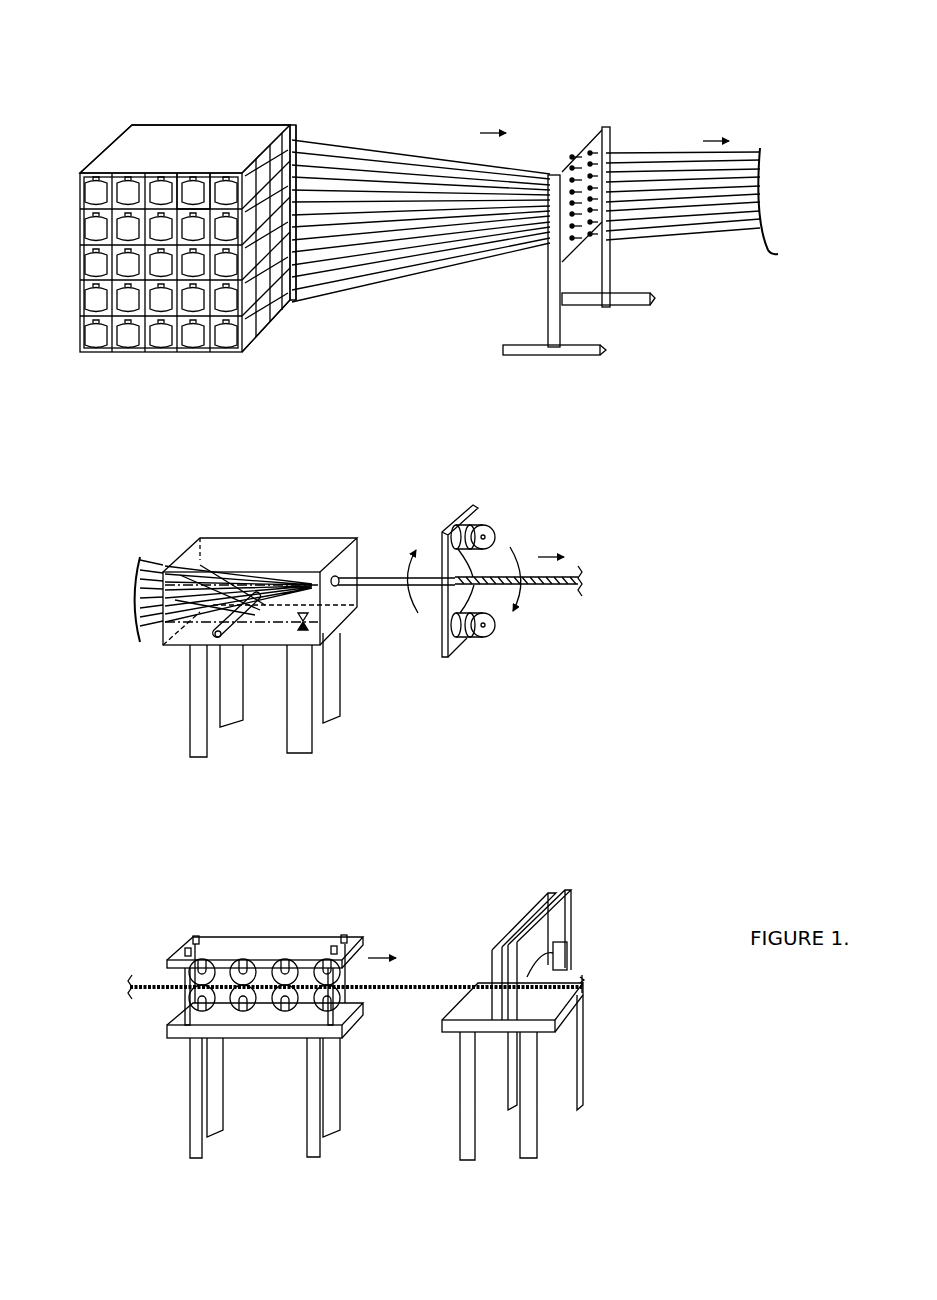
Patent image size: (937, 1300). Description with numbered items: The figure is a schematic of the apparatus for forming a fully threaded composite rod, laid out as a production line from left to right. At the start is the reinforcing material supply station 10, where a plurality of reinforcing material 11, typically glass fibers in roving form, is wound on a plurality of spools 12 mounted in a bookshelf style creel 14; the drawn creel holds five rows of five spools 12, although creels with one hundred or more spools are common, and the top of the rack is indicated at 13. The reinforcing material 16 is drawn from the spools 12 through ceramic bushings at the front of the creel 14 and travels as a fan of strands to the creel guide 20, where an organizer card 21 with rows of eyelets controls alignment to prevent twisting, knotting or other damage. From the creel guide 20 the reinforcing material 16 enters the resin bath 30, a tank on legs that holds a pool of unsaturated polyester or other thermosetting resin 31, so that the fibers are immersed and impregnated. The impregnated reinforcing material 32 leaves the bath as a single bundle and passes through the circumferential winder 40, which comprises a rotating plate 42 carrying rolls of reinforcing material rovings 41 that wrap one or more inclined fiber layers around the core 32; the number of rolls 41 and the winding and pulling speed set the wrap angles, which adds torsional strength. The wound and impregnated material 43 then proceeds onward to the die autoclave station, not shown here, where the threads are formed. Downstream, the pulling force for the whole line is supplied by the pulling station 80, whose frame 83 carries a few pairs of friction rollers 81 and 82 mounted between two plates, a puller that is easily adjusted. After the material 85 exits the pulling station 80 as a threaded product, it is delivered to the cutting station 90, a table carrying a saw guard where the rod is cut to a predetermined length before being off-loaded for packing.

The reinforcing material supply station 10 is at (236, 21).
The reinforcing material 11 is at (160, 193).
The spools 12 is at (190, 177).
The creel top 13 is at (217, 143).
The bookshelf style creel 14 is at (291, 125).
The reinforcing material 16 is at (413, 145).
The creel guide 20 is at (598, 21).
The organizer card 21 is at (605, 128).
The resin bath 30 is at (290, 422).
The resin 31 is at (305, 637).
The impregnated reinforcing material 32 is at (372, 578).
The circumferential winder 40 is at (474, 422).
The reinforcing material rovings 41 is at (493, 537).
The roller support plate 42 is at (457, 645).
The wound and impregnated material 43 is at (548, 584).
The pulling station 80 is at (274, 822).
The friction rollers 81 is at (253, 1003).
The friction rollers 82 is at (293, 967).
The lower plate / frame 83 is at (143, 987).
The material 85 is at (405, 990).
The cutting station 90 is at (542, 822).